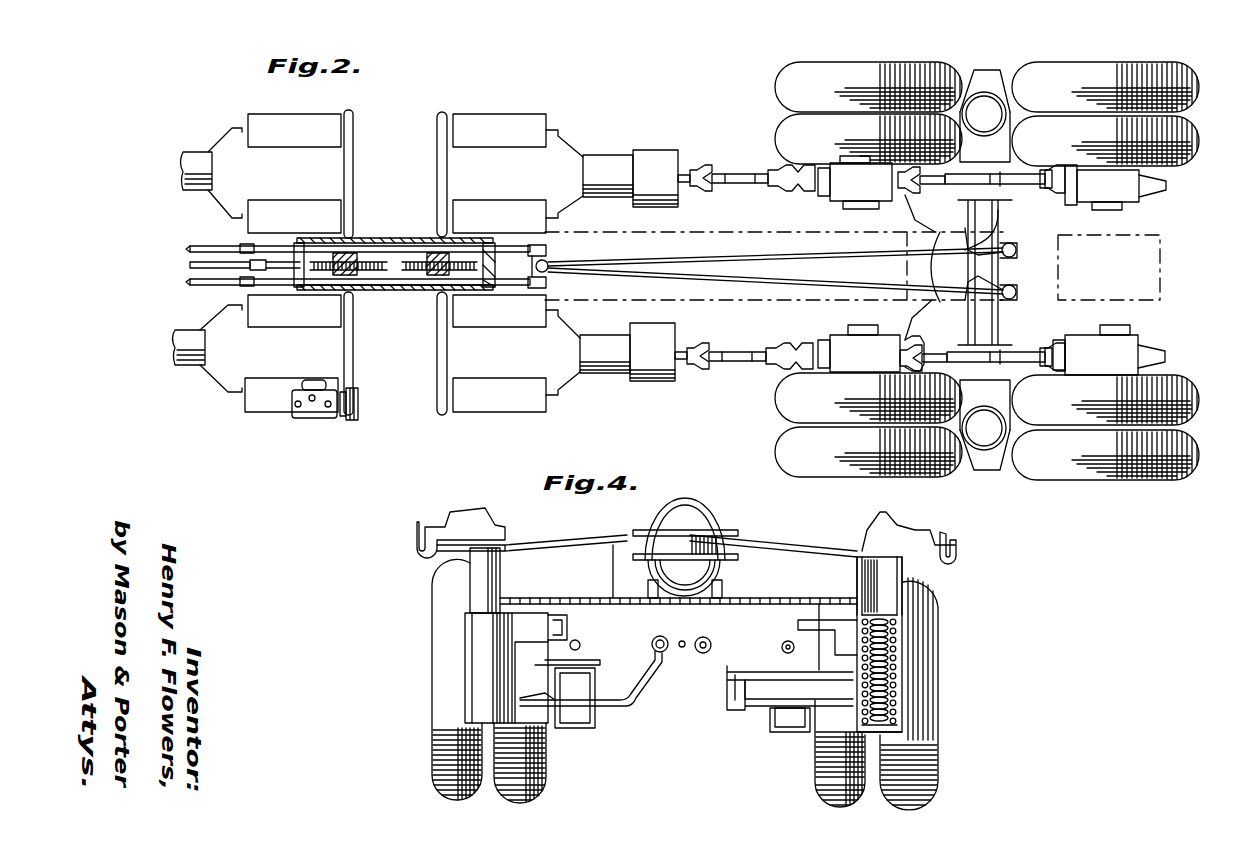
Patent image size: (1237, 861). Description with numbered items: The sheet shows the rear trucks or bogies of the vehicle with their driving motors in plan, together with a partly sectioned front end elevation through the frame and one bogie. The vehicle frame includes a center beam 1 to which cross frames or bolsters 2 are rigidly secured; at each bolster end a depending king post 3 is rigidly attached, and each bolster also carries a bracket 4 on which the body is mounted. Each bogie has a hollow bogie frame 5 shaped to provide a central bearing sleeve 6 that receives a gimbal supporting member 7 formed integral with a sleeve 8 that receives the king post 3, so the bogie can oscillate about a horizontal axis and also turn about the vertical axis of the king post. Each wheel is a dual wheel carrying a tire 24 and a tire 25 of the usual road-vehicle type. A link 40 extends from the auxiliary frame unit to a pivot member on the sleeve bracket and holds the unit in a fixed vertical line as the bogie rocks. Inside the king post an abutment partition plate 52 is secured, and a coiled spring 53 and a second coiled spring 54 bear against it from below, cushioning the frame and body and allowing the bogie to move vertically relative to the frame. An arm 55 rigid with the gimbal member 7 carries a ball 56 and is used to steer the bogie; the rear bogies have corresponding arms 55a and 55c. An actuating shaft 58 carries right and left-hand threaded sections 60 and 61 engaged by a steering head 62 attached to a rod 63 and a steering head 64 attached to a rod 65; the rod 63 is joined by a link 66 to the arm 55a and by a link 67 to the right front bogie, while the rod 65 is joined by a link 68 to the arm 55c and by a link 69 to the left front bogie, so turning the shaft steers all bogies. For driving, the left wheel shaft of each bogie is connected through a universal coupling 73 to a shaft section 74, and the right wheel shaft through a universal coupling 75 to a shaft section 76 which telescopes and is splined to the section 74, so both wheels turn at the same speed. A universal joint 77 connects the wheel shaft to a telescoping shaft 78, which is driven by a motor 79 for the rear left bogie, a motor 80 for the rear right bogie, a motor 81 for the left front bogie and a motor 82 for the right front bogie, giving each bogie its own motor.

In FIG. 2, the center beam 1 is at (700, 232).
In FIG. 4, the center beam 1 is at (722, 590).
In FIG. 2, the cross frame or bolster 2 is at (995, 70).
In FIG. 4, the cross frame or bolster 2 is at (797, 537).
In FIG. 4, the king post 3 is at (480, 596).
In FIG. 4, the bracket 4 is at (455, 526).
In FIG. 2, the bogie frame 5 is at (942, 225).
In FIG. 4, the bogie frame 5 is at (575, 728).
In FIG. 4, the central bearing sleeve 6 is at (580, 664).
In FIG. 4, the gimbal supporting member 7 is at (790, 680).
In FIG. 2, the sleeve 8 is at (984, 271).
In FIG. 4, the sleeve 8 is at (480, 662).
In FIG. 2, the tire 24 is at (777, 80).
In FIG. 4, the tire 24 is at (432, 745).
In FIG. 2, the tire 25 is at (777, 136).
In FIG. 4, the tire 25 is at (546, 772).
In FIG. 2, the link 40 is at (868, 162).
In FIG. 4, the abutment partition plate 52 is at (898, 610).
In FIG. 4, the coiled spring 53 is at (902, 640).
In FIG. 4, the second coiled spring 54 is at (900, 627).
In FIG. 4, the arm 55 is at (660, 690).
In FIG. 2, the arm of left-hand rear bogie 55a is at (1003, 308).
In FIG. 2, the arm of right rear bogie 55c is at (1000, 222).
In FIG. 4, the ball 56 is at (660, 636).
In FIG. 2, the actuating shaft 58 is at (400, 268).
In FIG. 2, the threaded section 60 is at (375, 270).
In FIG. 2, the threaded section 61 is at (425, 270).
In FIG. 2, the steering head 62 is at (350, 240).
In FIG. 2, the rod 63 is at (540, 250).
In FIG. 2, the steering head 64 is at (438, 240).
In FIG. 2, the rod 65 is at (547, 288).
In FIG. 2, the link 66 is at (820, 286).
In FIG. 2, the link 67 is at (198, 247).
In FIG. 2, the link 68 is at (785, 262).
In FIG. 2, the link 69 is at (210, 283).
In FIG. 2, the universal coupling 73 is at (905, 345).
In FIG. 2, the shaft section 74 is at (940, 190).
In FIG. 2, the universal coupling 75 is at (1060, 344).
In FIG. 2, the shaft section 76 is at (1018, 172).
In FIG. 2, the universal joint 77 is at (800, 186).
In FIG. 2, the shaft 78 is at (758, 174).
In FIG. 2, the motor 79 is at (580, 372).
In FIG. 2, the motor 80 is at (583, 150).
In FIG. 2, the motor 81 is at (230, 375).
In FIG. 2, the motor 82 is at (218, 140).